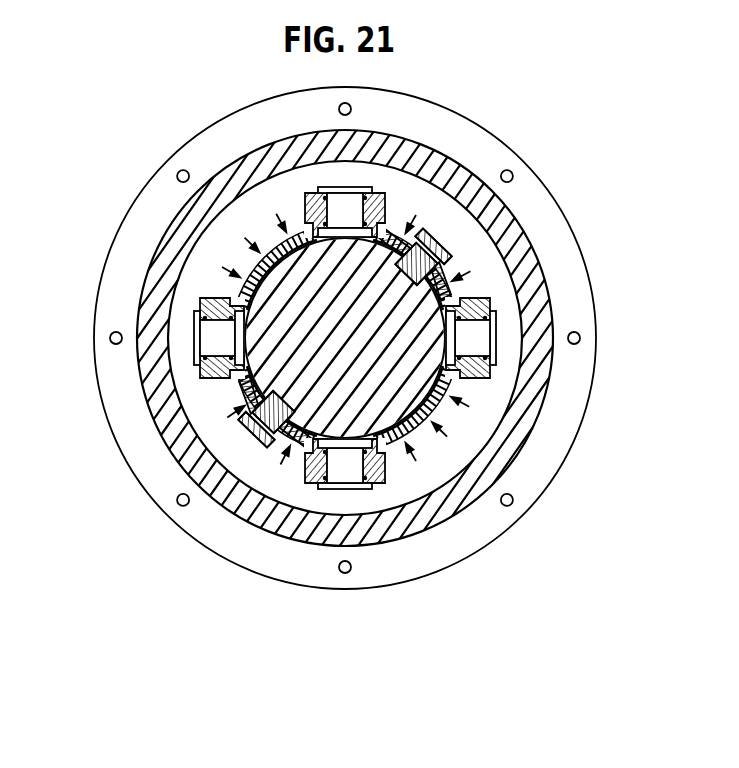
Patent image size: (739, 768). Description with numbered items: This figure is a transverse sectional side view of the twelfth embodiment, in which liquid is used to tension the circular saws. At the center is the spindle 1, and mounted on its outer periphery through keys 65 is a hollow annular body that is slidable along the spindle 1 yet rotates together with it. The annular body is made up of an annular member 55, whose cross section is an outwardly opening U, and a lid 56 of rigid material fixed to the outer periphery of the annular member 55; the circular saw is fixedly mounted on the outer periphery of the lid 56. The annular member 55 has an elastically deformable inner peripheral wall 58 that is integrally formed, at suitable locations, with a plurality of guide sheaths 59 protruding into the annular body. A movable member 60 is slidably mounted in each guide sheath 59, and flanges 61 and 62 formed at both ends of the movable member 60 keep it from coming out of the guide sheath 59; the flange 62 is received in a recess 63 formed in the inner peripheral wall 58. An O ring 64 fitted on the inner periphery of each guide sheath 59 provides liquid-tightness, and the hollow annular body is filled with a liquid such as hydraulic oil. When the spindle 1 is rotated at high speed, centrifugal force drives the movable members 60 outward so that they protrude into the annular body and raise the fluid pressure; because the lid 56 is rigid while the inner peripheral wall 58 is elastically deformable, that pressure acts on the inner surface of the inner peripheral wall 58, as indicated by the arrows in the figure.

The spindle 1 is at (400, 400).
The annular member 55 is at (230, 513).
The lid 56 is at (140, 312).
The inner peripheral wall 58 is at (253, 270).
The guide sheath 59 is at (387, 217).
The movable member 60 is at (412, 355).
The flange 61 is at (353, 473).
The flange 62 is at (343, 450).
The recess 63 is at (387, 218).
The O ring 64 is at (447, 378).
The key 65 is at (262, 430).